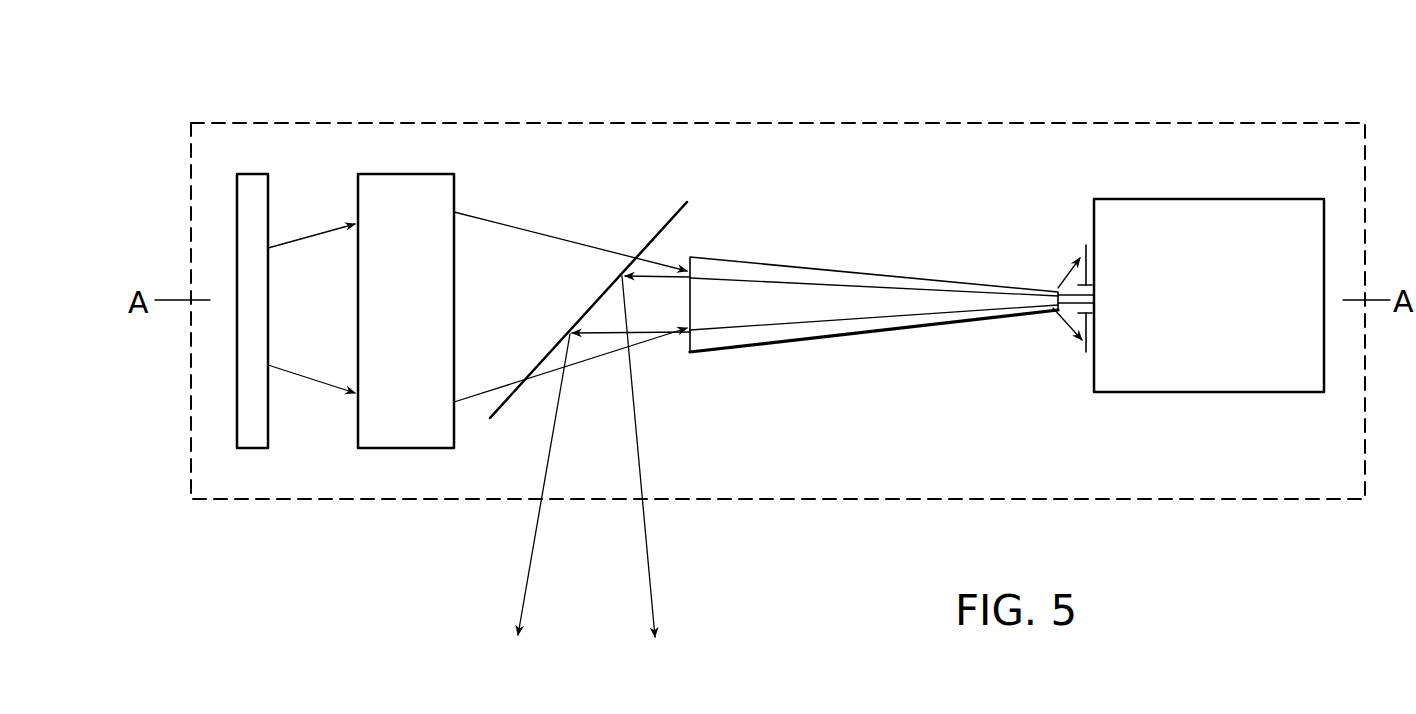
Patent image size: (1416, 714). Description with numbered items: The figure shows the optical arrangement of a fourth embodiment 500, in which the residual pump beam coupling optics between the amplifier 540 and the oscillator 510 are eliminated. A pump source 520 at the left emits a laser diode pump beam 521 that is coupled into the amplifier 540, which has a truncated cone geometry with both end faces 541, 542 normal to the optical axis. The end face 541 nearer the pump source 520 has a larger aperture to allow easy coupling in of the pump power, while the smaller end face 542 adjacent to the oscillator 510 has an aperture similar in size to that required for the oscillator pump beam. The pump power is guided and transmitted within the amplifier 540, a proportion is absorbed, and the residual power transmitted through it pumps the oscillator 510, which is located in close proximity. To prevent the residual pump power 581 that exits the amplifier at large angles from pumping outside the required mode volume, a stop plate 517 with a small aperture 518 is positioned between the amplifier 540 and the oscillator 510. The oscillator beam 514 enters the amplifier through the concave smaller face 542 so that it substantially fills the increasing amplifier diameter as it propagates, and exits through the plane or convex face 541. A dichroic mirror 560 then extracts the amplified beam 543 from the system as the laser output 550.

The fourth embodiment 500 is at (510, 123).
The oscillator 510 is at (1188, 228).
The oscillator beam 514 is at (818, 322).
The stop plate 517 is at (1063, 277).
The aperture 518 is at (1088, 305).
The pump source 520 is at (252, 192).
The laser diode pump beam 521 is at (525, 262).
The amplifier 540 is at (852, 272).
The end face 541 is at (673, 345).
The end face 542 is at (1037, 305).
The amplified beam 543 is at (637, 332).
The laser output 550 is at (615, 605).
The dichroic mirror 560 is at (660, 232).
The residual pump power 581 is at (1066, 320).